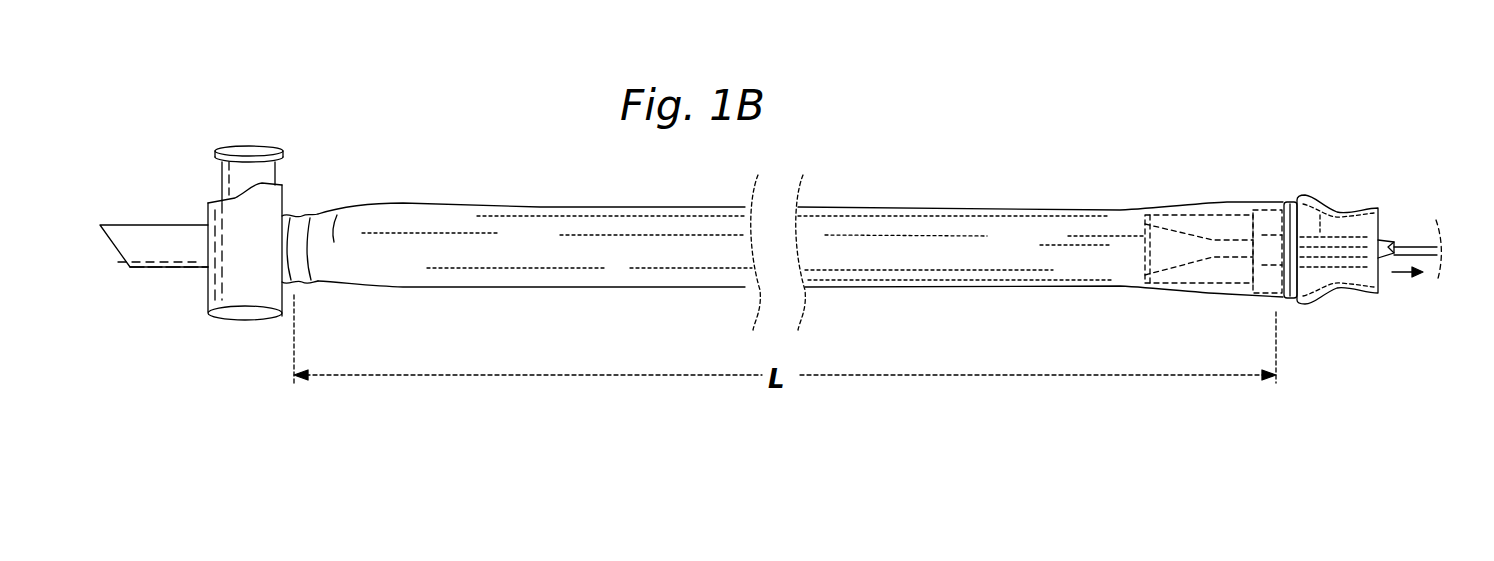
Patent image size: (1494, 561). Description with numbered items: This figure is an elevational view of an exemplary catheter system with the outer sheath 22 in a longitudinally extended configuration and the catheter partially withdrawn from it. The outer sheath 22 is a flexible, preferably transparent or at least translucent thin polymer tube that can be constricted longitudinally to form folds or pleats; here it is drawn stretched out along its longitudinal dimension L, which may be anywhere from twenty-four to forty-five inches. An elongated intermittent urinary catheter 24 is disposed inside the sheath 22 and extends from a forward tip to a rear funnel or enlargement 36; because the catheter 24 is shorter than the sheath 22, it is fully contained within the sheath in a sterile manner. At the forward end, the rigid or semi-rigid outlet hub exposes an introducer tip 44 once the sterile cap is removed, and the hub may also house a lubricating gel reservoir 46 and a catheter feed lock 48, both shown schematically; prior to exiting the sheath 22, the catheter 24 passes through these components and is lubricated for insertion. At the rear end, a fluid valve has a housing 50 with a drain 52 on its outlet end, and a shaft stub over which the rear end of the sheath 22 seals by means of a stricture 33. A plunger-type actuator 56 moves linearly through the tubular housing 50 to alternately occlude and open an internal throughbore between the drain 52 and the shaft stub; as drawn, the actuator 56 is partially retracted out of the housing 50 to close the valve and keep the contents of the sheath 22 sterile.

The outer sheath 22 is at (966, 210).
The intermittent urinary catheter 24 is at (1418, 245).
The stricture 33 is at (302, 212).
The rear funnel 36 is at (1177, 223).
The introducer tip 44 is at (1385, 240).
The lubricating gel reservoir 46 is at (1334, 208).
The catheter feed lock 48 is at (1263, 222).
The housing 50 is at (208, 283).
The drain 52 is at (172, 223).
The actuator 56 is at (248, 146).